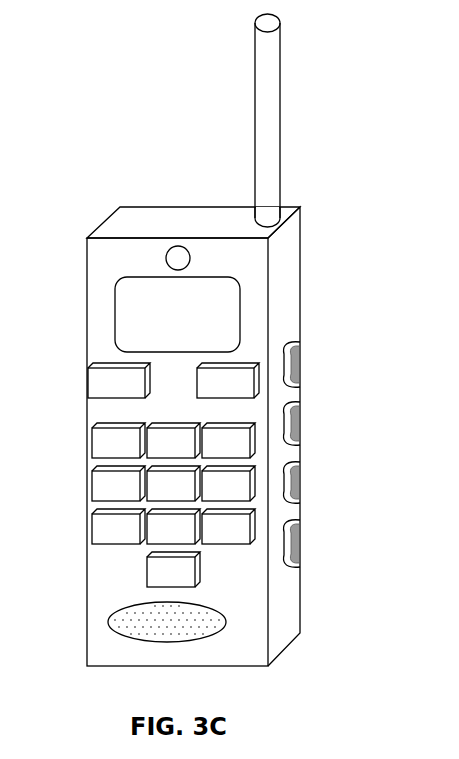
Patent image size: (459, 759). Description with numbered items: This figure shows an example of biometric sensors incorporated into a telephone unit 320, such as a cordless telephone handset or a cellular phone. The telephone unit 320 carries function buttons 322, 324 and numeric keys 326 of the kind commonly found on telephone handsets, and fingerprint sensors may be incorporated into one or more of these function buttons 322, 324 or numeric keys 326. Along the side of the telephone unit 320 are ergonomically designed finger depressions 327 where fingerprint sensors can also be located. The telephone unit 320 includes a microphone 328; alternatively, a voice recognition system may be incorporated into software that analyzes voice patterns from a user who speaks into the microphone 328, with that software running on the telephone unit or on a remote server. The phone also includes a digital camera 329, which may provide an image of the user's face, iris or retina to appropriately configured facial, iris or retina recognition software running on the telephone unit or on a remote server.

The telephone unit 320 is at (120, 65).
The function button 322 is at (91, 374).
The function button 324 is at (258, 381).
The numeric keys 326 is at (95, 442).
The finger depressions 327 is at (293, 539).
The microphone 328 is at (127, 623).
The digital camera 329 is at (171, 249).